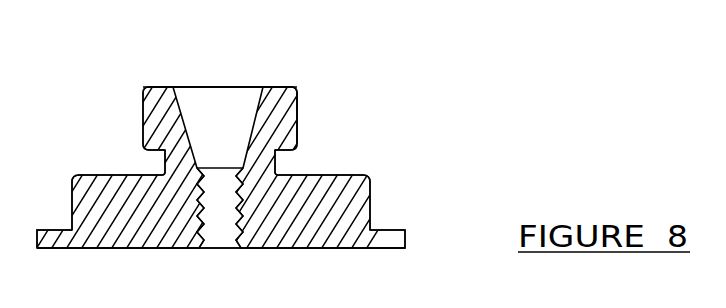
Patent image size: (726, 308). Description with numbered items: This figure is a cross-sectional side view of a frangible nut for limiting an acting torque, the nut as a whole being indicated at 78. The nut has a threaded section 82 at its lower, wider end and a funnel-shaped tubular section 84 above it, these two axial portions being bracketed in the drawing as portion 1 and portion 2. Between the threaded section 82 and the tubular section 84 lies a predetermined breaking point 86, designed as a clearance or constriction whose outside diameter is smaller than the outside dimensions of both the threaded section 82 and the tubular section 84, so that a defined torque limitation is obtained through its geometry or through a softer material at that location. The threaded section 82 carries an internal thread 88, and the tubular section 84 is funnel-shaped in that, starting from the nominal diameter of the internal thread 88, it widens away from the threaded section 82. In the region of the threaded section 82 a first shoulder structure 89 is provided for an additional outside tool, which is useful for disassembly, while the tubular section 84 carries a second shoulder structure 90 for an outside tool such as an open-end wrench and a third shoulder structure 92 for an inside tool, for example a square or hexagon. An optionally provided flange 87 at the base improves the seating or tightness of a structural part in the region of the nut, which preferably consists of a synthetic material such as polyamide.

The pressure relief fitting / plug assembly 78 is at (377, 81).
The funnel-shaped tubular section 84 is at (131, 104).
The first shoulder structure 89 is at (300, 105).
The predetermined breaking point 86 is at (147, 158).
The second shoulder structure 90 is at (64, 205).
The internal thread 88 is at (228, 168).
The threaded section 82 is at (239, 228).
The flange 87 is at (221, 260).
The third shoulder structure 92 is at (47, 240).
The first portion 1 is at (412, 178).
The second portion 2 is at (412, 87).